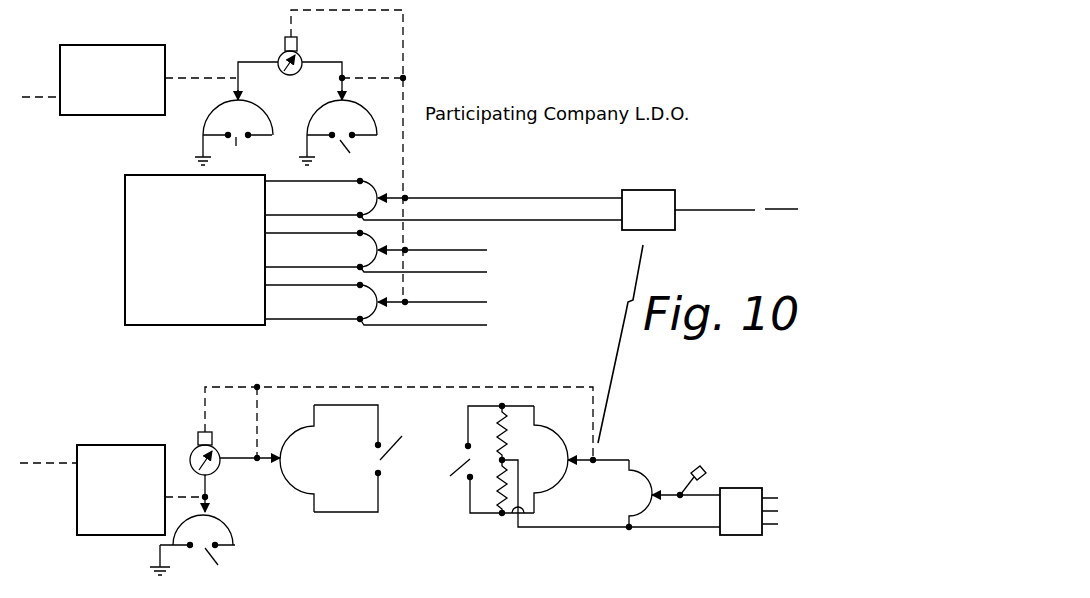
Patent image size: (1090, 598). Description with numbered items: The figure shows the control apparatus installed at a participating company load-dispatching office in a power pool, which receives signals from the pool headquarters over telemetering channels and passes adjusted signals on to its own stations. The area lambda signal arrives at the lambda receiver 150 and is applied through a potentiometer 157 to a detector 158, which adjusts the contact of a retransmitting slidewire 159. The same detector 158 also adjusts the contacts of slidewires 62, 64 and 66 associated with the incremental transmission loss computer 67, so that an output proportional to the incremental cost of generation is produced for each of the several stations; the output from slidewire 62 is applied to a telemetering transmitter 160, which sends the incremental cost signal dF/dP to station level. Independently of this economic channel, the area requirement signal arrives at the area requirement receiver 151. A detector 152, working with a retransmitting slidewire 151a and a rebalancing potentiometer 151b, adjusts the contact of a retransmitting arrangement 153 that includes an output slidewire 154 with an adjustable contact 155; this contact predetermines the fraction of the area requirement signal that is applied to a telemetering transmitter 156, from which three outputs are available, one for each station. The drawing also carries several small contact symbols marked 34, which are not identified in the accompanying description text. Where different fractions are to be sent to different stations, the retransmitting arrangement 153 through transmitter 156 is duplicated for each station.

The lambda receiver 150 is at (93, 45).
The area requirement receiver 151 is at (85, 448).
The retransmitting slidewire 151a is at (233, 530).
The rebalancing potentiometer 151b is at (303, 432).
The detector 152 is at (215, 450).
The retransmitting arrangement 153 is at (552, 475).
The output slidewire 154 is at (643, 467).
The adjustable contact 155 is at (673, 490).
The telemetering transmitter 156 is at (735, 495).
The potentiometer 157 is at (213, 120).
The detector 158 is at (281, 52).
The retransmitting slidewire 159 is at (330, 110).
The telemetering transmitter 160 is at (654, 200).
The relay contacts 34 is at (337, 362).
The slidewire 62 is at (362, 189).
The slidewire 64 is at (362, 241).
The slidewire 66 is at (362, 293).
The incremental transmission loss computer 67 is at (178, 309).